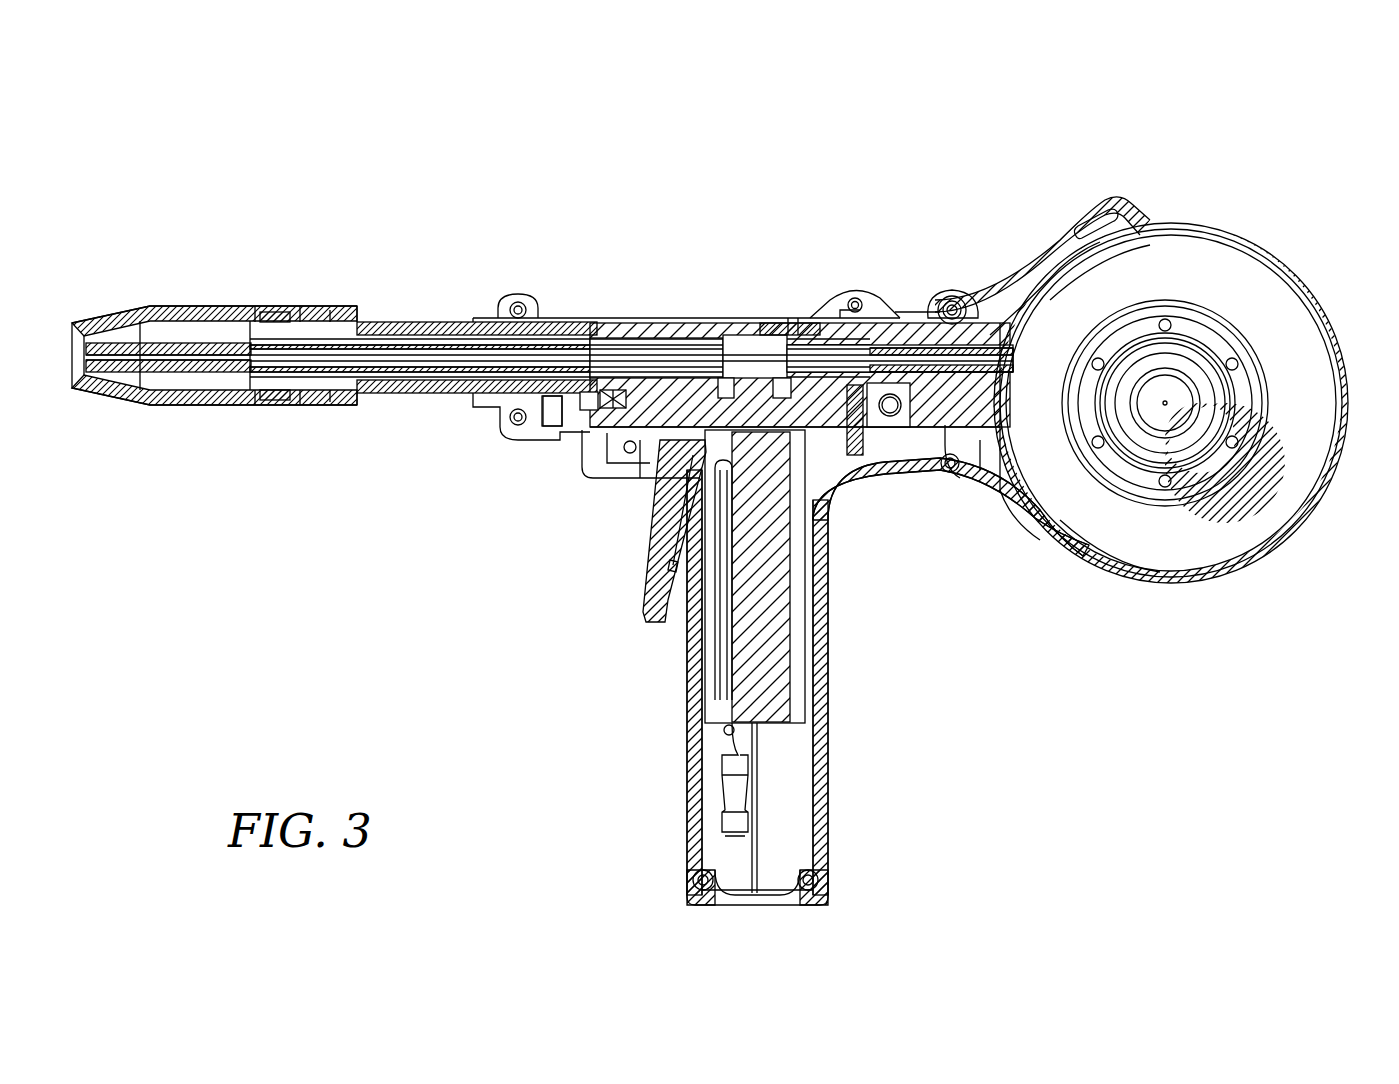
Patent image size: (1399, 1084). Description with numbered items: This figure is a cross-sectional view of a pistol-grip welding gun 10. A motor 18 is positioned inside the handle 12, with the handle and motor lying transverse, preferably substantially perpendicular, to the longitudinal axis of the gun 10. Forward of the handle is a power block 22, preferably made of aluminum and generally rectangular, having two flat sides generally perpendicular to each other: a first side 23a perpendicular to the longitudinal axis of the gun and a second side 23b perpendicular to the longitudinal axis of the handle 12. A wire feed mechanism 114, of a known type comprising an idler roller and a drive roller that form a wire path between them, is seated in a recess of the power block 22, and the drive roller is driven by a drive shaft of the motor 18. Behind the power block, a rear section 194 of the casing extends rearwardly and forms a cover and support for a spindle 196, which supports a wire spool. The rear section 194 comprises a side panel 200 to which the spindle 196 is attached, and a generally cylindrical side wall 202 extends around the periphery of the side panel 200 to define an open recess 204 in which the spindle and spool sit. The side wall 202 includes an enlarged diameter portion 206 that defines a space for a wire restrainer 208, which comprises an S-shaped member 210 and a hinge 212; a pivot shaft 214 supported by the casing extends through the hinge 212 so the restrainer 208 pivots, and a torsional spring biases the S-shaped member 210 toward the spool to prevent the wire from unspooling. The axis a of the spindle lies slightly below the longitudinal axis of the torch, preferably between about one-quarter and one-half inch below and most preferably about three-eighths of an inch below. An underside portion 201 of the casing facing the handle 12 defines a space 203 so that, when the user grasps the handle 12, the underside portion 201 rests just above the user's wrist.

The welding gun 10 is at (542, 392).
The handle 12 is at (873, 749).
The motor 18 is at (770, 648).
The power block 22 is at (597, 470).
The first side 23a is at (557, 445).
The second side 23b is at (637, 462).
The wire feed mechanism 114 is at (793, 312).
The rear section 194 is at (1238, 186).
The spindle 196 is at (1272, 358).
The side panel 200 is at (1252, 283).
The underside portion 201 is at (998, 550).
The side wall 202 is at (1306, 290).
The space 203 is at (969, 554).
The recess 204 is at (1240, 518).
The enlarged diameter portion 206 is at (1102, 188).
The wire restrainer 208 is at (1088, 222).
The S-shaped member 210 is at (1045, 268).
The hinge 212 is at (956, 286).
The pivot shaft 214 is at (938, 298).
The axis of the spindle a is at (1165, 404).